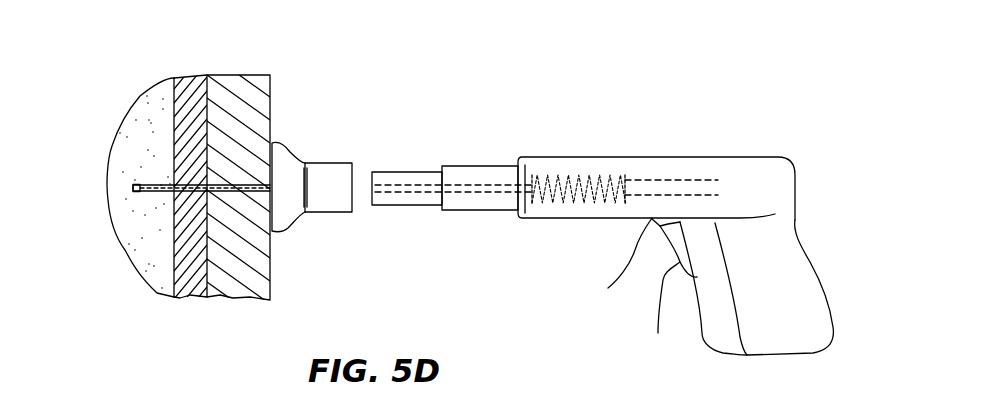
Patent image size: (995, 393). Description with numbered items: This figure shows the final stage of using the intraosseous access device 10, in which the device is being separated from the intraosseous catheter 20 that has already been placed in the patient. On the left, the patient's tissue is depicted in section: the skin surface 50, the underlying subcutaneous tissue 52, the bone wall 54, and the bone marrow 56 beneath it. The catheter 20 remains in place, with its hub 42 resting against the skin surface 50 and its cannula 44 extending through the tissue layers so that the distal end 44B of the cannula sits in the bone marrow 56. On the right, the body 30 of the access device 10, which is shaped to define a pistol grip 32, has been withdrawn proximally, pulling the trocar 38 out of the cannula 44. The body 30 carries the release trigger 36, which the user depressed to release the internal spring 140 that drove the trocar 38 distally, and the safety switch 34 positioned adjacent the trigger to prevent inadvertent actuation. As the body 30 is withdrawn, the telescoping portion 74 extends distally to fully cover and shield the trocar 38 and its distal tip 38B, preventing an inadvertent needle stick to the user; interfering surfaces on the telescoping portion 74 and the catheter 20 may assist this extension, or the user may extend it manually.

The intraosseous access device 10 is at (650, 130).
The intraosseous catheter 20 is at (318, 145).
The body 30 is at (713, 165).
The pistol grip 32 is at (787, 287).
The safety switch 34 is at (608, 288).
The release trigger 36 is at (658, 333).
The trocar needle 38 is at (458, 187).
The distal tip of trocar 38B is at (380, 187).
The hub 42 is at (317, 208).
The cannula 44 is at (207, 193).
The distal end of cannula 44B is at (137, 195).
The skin surface 50 is at (272, 97).
The subcutaneous tissue 52 is at (235, 85).
The bone wall 54 is at (192, 88).
The bone marrow 56 is at (123, 182).
The telescoping portion 74 is at (412, 207).
The spring 140 is at (553, 180).